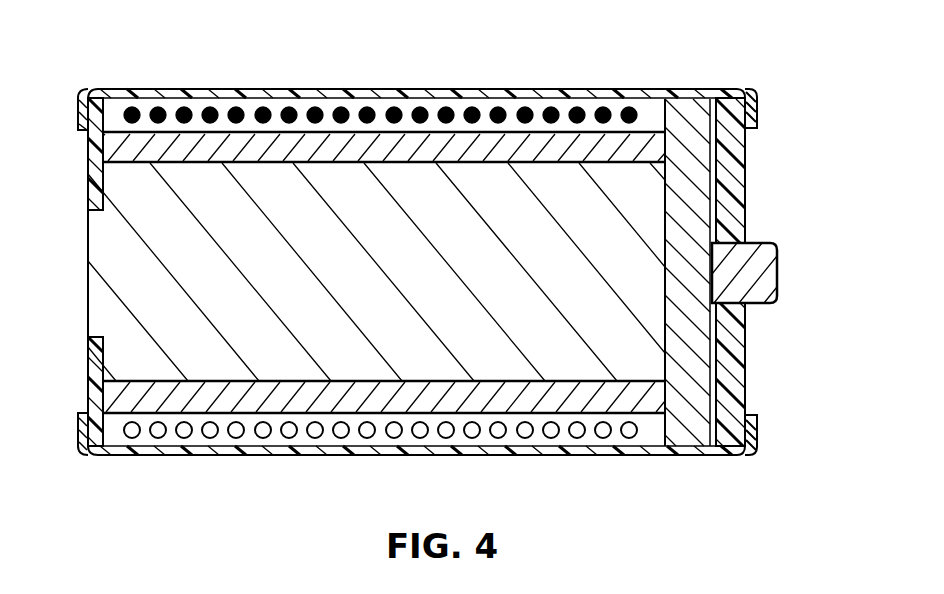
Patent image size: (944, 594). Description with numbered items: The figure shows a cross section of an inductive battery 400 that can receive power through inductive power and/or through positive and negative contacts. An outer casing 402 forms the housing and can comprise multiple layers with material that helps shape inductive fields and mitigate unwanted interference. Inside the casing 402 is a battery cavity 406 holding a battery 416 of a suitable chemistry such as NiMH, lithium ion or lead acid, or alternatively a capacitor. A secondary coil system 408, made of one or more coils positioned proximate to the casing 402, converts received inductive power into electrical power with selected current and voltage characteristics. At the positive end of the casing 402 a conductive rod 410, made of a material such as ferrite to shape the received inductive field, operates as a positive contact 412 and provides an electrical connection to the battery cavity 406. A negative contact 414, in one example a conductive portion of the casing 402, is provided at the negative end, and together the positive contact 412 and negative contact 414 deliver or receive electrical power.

The inductive battery 400 is at (605, 112).
The outer casing 402 is at (625, 456).
The battery cavity 406 is at (148, 299).
The secondary coil system 408 is at (472, 430).
The conductive rod 410 is at (777, 260).
The positive contact 412 is at (744, 273).
The negative contact 414 is at (88, 255).
The battery 416 is at (417, 235).